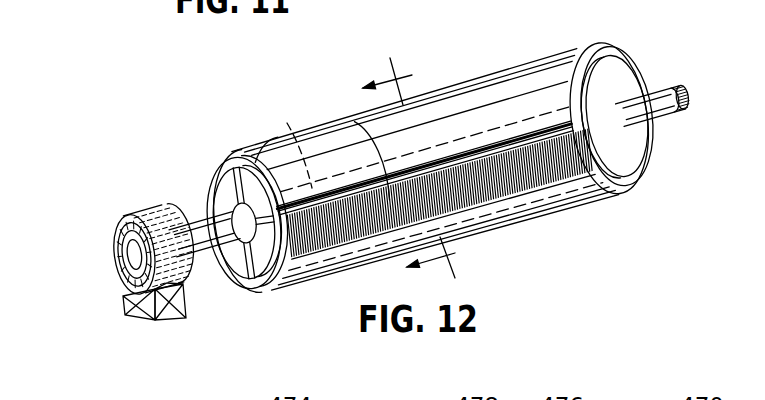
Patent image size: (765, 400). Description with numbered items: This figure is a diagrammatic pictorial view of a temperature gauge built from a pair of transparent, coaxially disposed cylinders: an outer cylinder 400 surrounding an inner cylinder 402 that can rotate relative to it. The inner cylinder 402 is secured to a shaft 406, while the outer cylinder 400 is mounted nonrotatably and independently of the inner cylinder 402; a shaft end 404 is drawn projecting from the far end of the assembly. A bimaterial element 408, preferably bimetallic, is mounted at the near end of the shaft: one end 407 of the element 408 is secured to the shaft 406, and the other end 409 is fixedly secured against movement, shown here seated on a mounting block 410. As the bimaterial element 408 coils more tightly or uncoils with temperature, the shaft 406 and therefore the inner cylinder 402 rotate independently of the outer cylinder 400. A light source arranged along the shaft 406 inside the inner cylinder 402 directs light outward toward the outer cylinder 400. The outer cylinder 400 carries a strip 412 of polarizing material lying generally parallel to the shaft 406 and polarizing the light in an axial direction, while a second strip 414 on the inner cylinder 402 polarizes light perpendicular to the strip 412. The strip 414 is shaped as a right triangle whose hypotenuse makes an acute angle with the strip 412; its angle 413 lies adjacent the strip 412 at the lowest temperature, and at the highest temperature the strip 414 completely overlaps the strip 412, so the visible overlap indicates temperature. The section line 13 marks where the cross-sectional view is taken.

The outer cylinder 400 is at (222, 162).
The inner cylinder 402 is at (212, 186).
The shaft end 404 is at (655, 82).
The shaft 406 is at (200, 214).
The end of bimaterial element 407 is at (117, 251).
The bimaterial element 408 is at (134, 202).
The other end of bimaterial element 409 is at (174, 303).
The mounting block 410 is at (125, 305).
The strip 412 is at (342, 146).
The angle of strip 413 is at (293, 185).
The second strip 414 is at (268, 140).
The section line 13- 13 is at (409, 168).